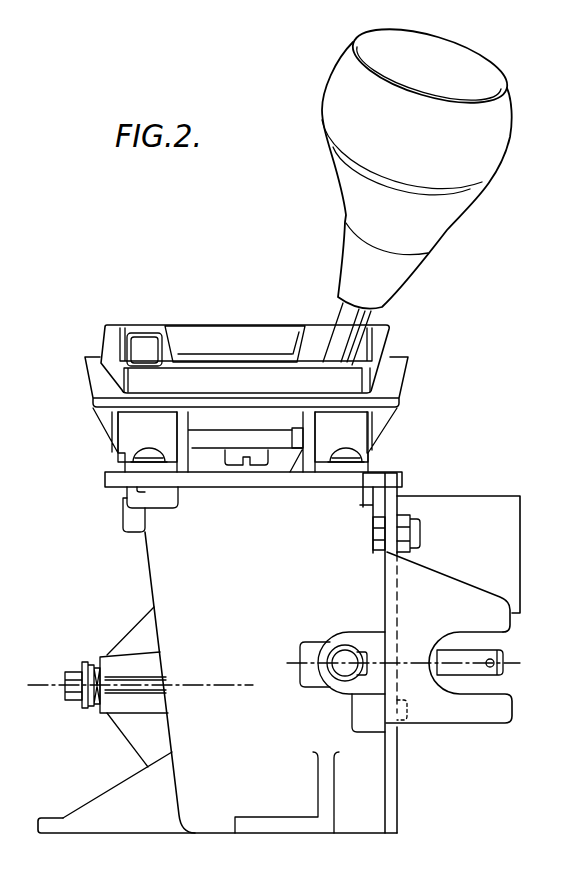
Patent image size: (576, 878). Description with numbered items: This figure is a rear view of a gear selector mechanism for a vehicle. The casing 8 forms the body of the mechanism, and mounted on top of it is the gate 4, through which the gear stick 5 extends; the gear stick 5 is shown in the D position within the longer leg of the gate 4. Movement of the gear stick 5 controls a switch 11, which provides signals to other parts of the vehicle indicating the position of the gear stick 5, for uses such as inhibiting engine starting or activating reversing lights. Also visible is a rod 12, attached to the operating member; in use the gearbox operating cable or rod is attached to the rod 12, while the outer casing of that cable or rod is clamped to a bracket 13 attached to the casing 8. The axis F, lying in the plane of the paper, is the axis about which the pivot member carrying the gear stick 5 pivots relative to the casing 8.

The gate 4 is at (148, 355).
The gear stick 5 is at (343, 318).
The casing 8 is at (170, 570).
The switch 11 is at (488, 515).
The rod 12 is at (462, 666).
The bracket 13 is at (494, 710).
The axis F is at (63, 678).